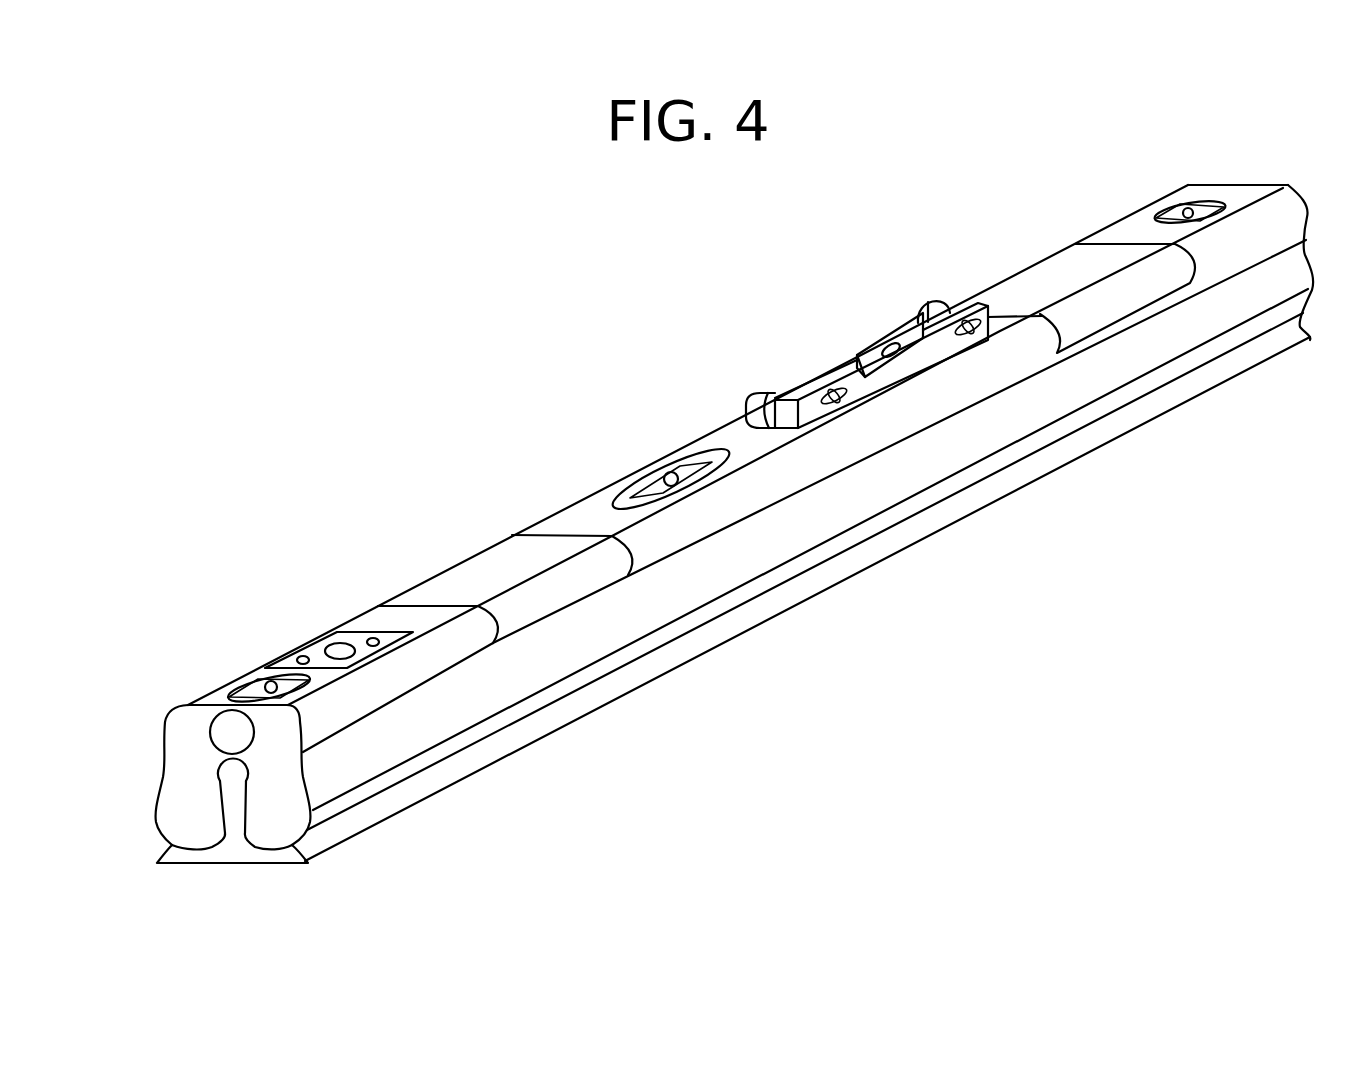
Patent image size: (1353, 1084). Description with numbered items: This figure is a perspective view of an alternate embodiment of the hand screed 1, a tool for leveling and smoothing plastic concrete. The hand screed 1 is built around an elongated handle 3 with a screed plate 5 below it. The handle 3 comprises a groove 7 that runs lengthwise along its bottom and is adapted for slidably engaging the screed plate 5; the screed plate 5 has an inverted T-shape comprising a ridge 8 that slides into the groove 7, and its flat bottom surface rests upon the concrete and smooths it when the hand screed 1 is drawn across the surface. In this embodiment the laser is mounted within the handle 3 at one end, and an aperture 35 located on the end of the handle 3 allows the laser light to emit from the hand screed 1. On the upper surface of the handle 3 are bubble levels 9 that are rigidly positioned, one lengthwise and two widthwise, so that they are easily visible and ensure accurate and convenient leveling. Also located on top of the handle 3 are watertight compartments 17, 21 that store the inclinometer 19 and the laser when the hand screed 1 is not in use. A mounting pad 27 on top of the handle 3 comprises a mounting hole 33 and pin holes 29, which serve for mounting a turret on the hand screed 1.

The hand screed 1 is at (586, 332).
The handle 3 is at (1234, 184).
The screed plate 5 is at (224, 848).
The groove 7 is at (225, 785).
The ridge 8 is at (233, 777).
The bubble levels 9 is at (253, 690).
The watertight compartment 17 is at (1027, 293).
The inclinometer 19 is at (905, 288).
The watertight compartment 21 is at (468, 575).
The mounting pad 27 is at (366, 636).
The pin holes 29 is at (303, 655).
The mounting hole 33 is at (338, 647).
The aperture 35 is at (225, 733).